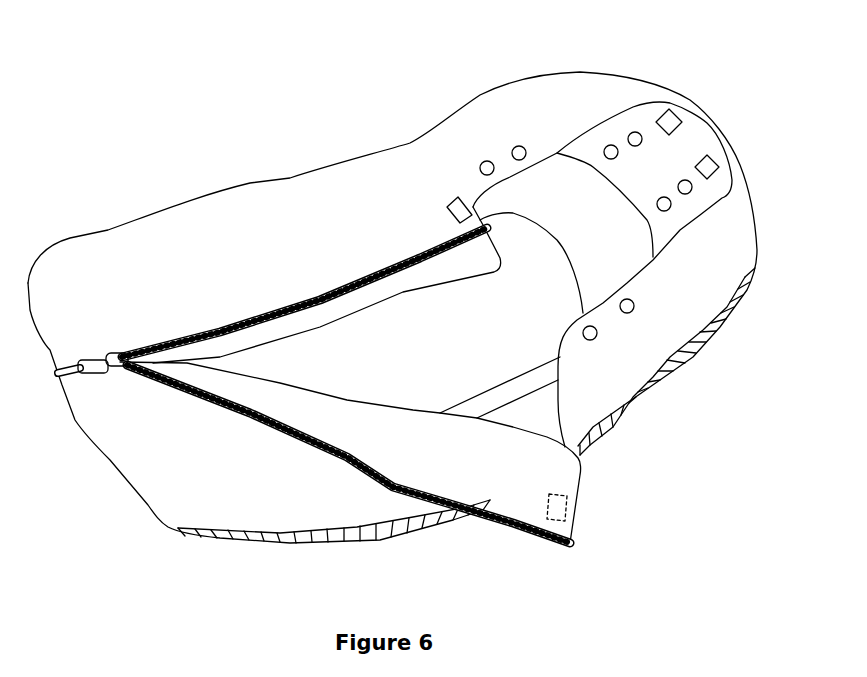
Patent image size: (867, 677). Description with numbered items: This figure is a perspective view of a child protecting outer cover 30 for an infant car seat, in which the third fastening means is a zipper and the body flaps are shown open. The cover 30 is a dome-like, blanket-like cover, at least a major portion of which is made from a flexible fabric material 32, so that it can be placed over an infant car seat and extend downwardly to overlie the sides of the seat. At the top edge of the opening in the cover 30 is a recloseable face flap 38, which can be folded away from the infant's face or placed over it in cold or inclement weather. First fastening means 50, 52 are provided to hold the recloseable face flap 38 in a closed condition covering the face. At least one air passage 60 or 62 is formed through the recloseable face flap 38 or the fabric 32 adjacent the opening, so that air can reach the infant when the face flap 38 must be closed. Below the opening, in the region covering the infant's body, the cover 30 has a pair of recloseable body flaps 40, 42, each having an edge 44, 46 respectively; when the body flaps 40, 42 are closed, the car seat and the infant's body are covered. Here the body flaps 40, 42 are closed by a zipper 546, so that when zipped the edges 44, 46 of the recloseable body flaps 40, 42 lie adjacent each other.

The child protecting outer cover 30 is at (727, 84).
The flexible fabric material 32 is at (175, 230).
The recloseable face flap 38 is at (693, 140).
The recloseable body flap 40 is at (402, 290).
The recloseable body flap 42 is at (557, 472).
The edge of body flap 44 is at (317, 328).
The edge of body flap 46 is at (522, 533).
The first fastening means 50 is at (450, 203).
The first fastening means 52 is at (716, 167).
The air passage 60 is at (692, 188).
The air passage 62 is at (634, 306).
The zipper 546 is at (75, 385).